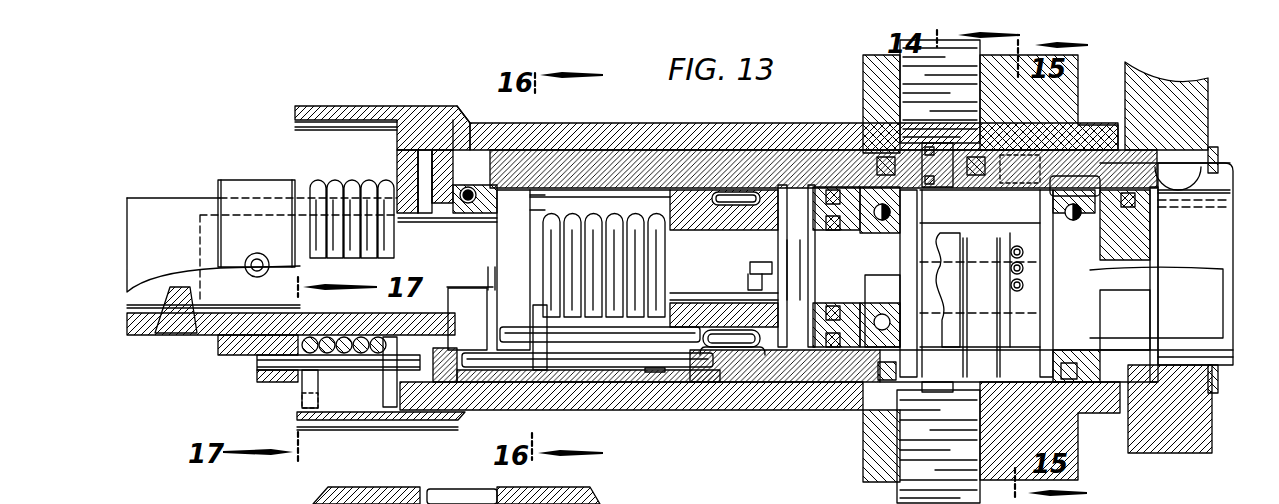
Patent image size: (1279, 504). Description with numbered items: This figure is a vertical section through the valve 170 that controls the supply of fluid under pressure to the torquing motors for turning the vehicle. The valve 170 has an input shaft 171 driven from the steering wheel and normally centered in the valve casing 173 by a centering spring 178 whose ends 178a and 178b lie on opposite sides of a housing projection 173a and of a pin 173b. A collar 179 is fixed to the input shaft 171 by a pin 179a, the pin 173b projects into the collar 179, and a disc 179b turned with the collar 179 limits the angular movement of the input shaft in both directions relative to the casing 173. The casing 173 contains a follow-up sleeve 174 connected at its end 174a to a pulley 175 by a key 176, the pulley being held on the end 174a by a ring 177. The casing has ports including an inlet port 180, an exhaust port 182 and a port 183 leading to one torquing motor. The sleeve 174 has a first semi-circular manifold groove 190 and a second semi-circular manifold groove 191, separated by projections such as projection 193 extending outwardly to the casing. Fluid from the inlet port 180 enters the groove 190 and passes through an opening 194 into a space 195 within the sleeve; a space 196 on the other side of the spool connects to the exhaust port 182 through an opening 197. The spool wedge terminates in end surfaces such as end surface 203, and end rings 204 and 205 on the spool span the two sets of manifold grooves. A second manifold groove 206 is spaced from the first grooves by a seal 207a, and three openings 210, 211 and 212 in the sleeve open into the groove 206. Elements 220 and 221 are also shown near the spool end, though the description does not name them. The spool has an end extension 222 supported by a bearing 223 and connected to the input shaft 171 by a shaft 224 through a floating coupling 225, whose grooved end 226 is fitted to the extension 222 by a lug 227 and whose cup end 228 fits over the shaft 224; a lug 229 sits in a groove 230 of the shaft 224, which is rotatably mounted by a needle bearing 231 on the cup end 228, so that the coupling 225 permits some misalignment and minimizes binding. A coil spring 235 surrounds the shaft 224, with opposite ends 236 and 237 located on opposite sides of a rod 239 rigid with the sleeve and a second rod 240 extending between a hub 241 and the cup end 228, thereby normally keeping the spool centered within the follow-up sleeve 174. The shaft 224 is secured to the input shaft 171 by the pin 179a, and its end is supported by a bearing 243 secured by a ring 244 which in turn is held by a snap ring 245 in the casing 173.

The valve 170 is at (763, 420).
The input shaft 171 is at (185, 190).
The valve casing 173 is at (750, 133).
The housing projection 173a is at (345, 402).
The pin 173b is at (273, 360).
The follow-up sleeve 174 is at (795, 266).
The end of follow-up sleeve 174a is at (1210, 196).
The pulley 175 is at (1172, 85).
The key 176 is at (1188, 165).
The ring 177 is at (1218, 160).
The centering spring 178 is at (332, 188).
The spring end 178a is at (390, 397).
The spring end 178b is at (308, 385).
The collar 179 is at (262, 190).
The pin 179a is at (250, 272).
The disc 179b is at (425, 160).
The port 180 is at (978, 106).
The port 182 is at (978, 423).
The port 183 is at (1012, 290).
The first semi-circular manifold groove 190 is at (965, 145).
The second semi-circular manifold groove 191 is at (900, 382).
The projection 193 is at (1010, 293).
The opening 194 is at (927, 174).
The space 195 is at (980, 268).
The space 196 is at (878, 350).
The opening 197 is at (978, 388).
The end surface 203 is at (880, 225).
The end ring 204 is at (928, 283).
The end ring 205 is at (1040, 205).
The semi-circular manifold groove 206 is at (1068, 382).
The seal 207a is at (1003, 160).
The opening 210 is at (1023, 252).
The opening 211 is at (1023, 268).
The opening 212 is at (1023, 285).
The bearing race 220 is at (1090, 257).
The ball bearing 221 is at (1085, 210).
The end extension 222 is at (836, 220).
The bearing 223 is at (880, 287).
The shaft 224 is at (608, 270).
The floating coupling 225 is at (731, 281).
The grooved end 226 is at (782, 205).
The lug 227 is at (818, 266).
The cup end 228 is at (736, 362).
The lug 229 is at (752, 282).
The groove 230 is at (752, 265).
The needle bearing 231 is at (740, 190).
The coil spring 235 is at (591, 220).
The spring end 236 is at (540, 380).
The spring end 237 is at (655, 372).
The rod 239 is at (700, 370).
The second rod 240 is at (518, 360).
The hub 241 is at (522, 190).
The bearing 243 is at (475, 186).
The ring 244 is at (448, 160).
The snap ring 245 is at (458, 108).